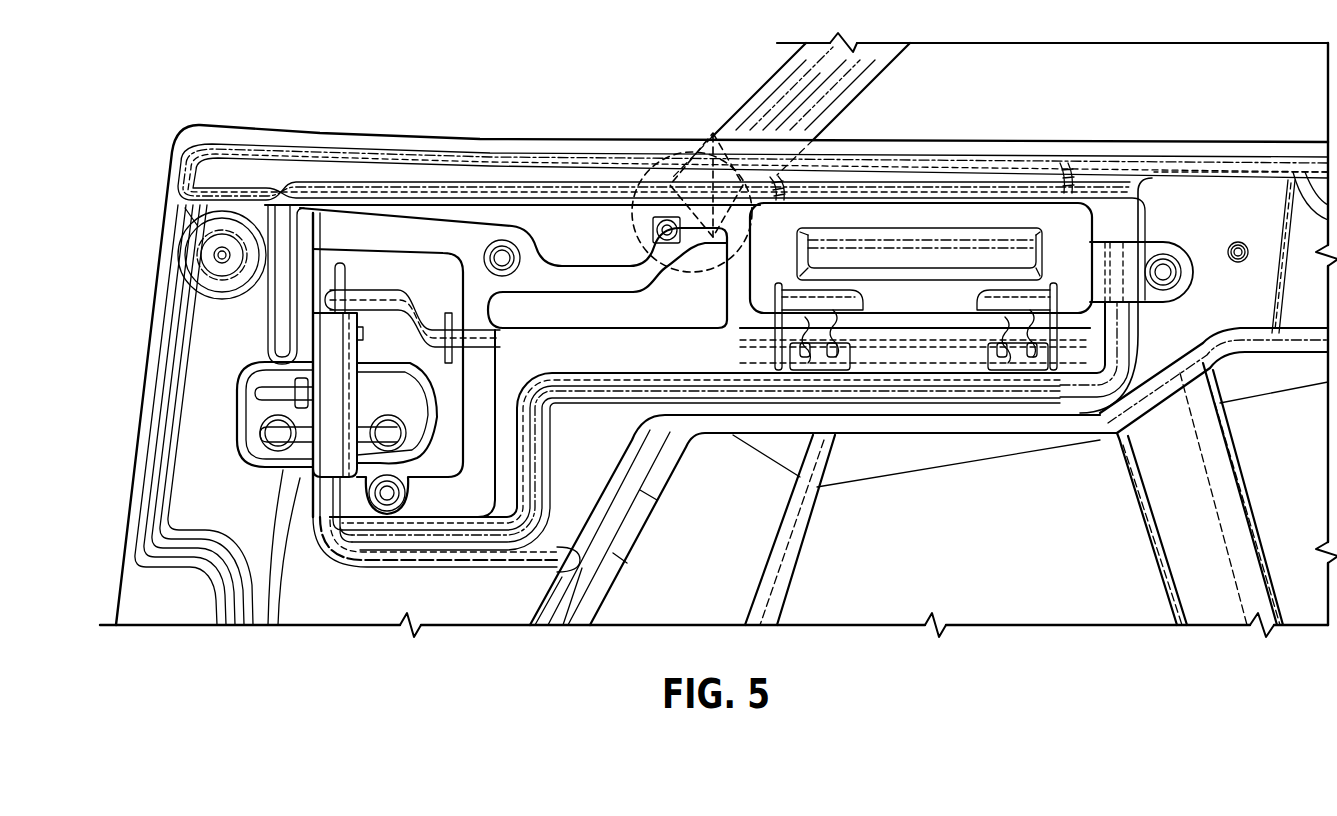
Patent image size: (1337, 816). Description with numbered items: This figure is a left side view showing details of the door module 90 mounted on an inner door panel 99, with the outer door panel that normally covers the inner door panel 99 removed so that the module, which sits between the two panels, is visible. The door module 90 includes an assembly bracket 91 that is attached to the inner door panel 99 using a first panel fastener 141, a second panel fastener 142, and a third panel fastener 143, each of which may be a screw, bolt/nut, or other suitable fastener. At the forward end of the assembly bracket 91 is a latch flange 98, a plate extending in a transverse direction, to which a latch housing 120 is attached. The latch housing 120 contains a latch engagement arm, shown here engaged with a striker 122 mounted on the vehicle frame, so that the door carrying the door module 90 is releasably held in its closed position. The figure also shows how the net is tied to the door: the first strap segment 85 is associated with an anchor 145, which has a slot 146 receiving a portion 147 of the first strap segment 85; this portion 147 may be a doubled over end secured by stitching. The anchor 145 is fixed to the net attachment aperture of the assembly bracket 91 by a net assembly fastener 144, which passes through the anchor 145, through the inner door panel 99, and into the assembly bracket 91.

The first strap segment 85 is at (855, 73).
The door module 90 is at (577, 258).
The assembly bracket 91 is at (455, 222).
The latch flange 98 is at (305, 357).
The inner door panel 99 is at (493, 600).
The latch housing 120 is at (330, 450).
The striker 122 is at (280, 437).
The first panel fastener 141 is at (386, 497).
The second panel fastener 142 is at (503, 240).
The third panel fastener 143 is at (1168, 266).
The net assembly fastener 144 is at (655, 229).
The anchor 145 is at (639, 176).
The slot 146 is at (673, 180).
The portion of the first strap segment 147 is at (710, 146).